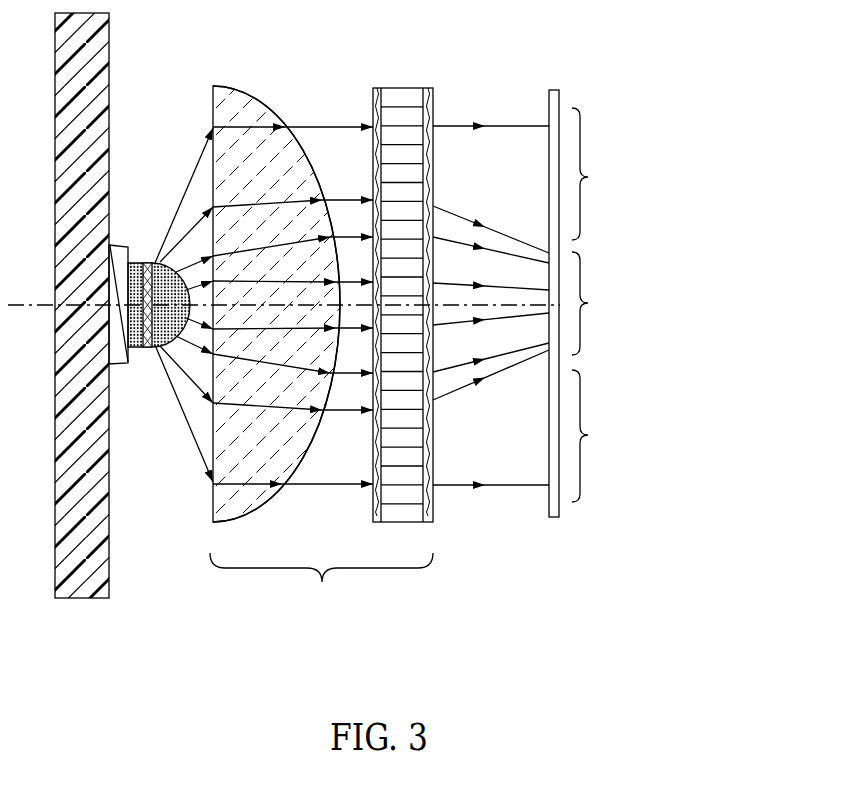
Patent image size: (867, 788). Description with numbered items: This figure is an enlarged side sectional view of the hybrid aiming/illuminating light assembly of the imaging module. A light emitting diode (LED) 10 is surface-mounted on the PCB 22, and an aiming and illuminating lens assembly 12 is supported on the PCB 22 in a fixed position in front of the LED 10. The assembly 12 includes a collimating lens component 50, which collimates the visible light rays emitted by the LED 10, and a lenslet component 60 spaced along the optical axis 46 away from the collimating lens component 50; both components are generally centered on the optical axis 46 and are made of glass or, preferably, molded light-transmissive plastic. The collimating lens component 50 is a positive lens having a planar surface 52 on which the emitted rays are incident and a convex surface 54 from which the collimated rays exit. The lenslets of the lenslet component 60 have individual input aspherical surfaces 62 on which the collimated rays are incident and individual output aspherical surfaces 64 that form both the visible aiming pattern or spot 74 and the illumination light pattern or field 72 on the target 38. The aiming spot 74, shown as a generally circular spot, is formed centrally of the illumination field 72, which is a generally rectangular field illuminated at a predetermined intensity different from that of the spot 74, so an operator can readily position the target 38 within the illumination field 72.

The light emitting diode (LED) 10 is at (148, 348).
The aiming and illuminating lens assembly 12 is at (320, 328).
The PCB 22 is at (110, 578).
The target 38 is at (553, 90).
The optical axis 46 is at (17, 310).
The collimating lens component 50 is at (287, 121).
The planar surface 52 is at (257, 291).
The convex surface 54 is at (313, 171).
The lenslet component 60 is at (402, 282).
The input aspherical surfaces 62 is at (373, 97).
The output aspherical surfaces 64 is at (433, 95).
The illumination light pattern or field 72 is at (736, 469).
The visible aiming pattern or spot 74 is at (769, 317).